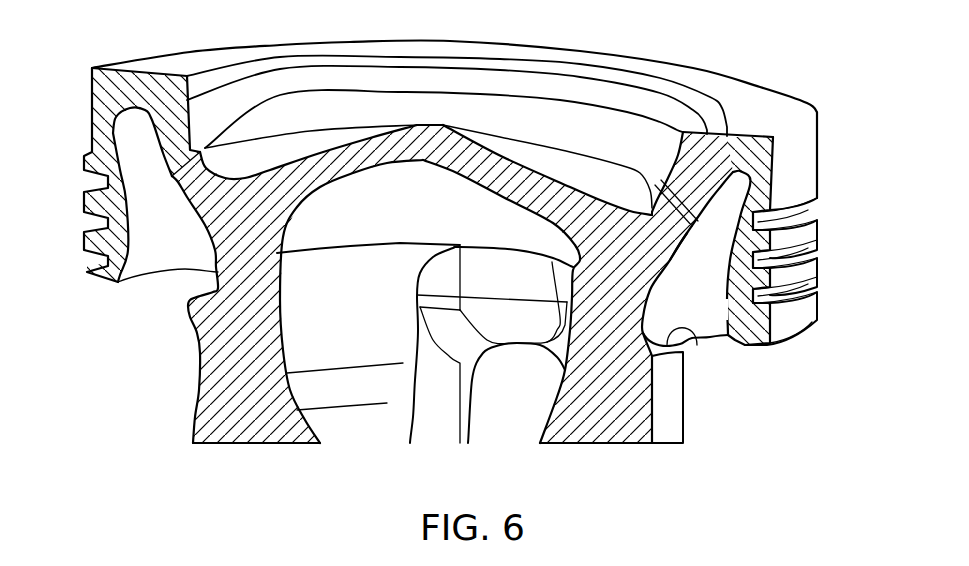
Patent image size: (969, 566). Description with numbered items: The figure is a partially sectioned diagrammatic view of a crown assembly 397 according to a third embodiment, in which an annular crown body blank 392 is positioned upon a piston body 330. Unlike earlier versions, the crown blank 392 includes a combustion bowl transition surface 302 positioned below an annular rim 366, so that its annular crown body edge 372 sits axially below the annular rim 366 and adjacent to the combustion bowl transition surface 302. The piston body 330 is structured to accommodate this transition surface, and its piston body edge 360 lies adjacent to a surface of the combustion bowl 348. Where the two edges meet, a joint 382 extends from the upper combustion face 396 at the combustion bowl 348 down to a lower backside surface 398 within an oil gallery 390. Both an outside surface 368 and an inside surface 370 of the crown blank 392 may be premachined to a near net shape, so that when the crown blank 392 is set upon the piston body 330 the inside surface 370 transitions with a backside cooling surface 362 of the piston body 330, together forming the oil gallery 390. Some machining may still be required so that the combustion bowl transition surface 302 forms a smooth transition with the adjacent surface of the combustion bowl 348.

The combustion bowl transition surface 302 is at (277, 110).
The piston body 330 is at (685, 407).
The combustion bowl 348 is at (348, 112).
The piston body edge 360 is at (672, 219).
The backside cooling surface 362 is at (178, 190).
The annular rim 366 is at (146, 70).
The outside surface 368 is at (812, 308).
The inside surface 370 is at (158, 270).
The annular crown body edge 372 is at (681, 208).
The joint 382 is at (204, 150).
The oil gallery 390 is at (142, 123).
The annular crown body blank 392 is at (820, 147).
The upper combustion face 396 is at (615, 166).
The crown assembly 397 is at (676, 55).
The lower backside surface 398 is at (667, 257).